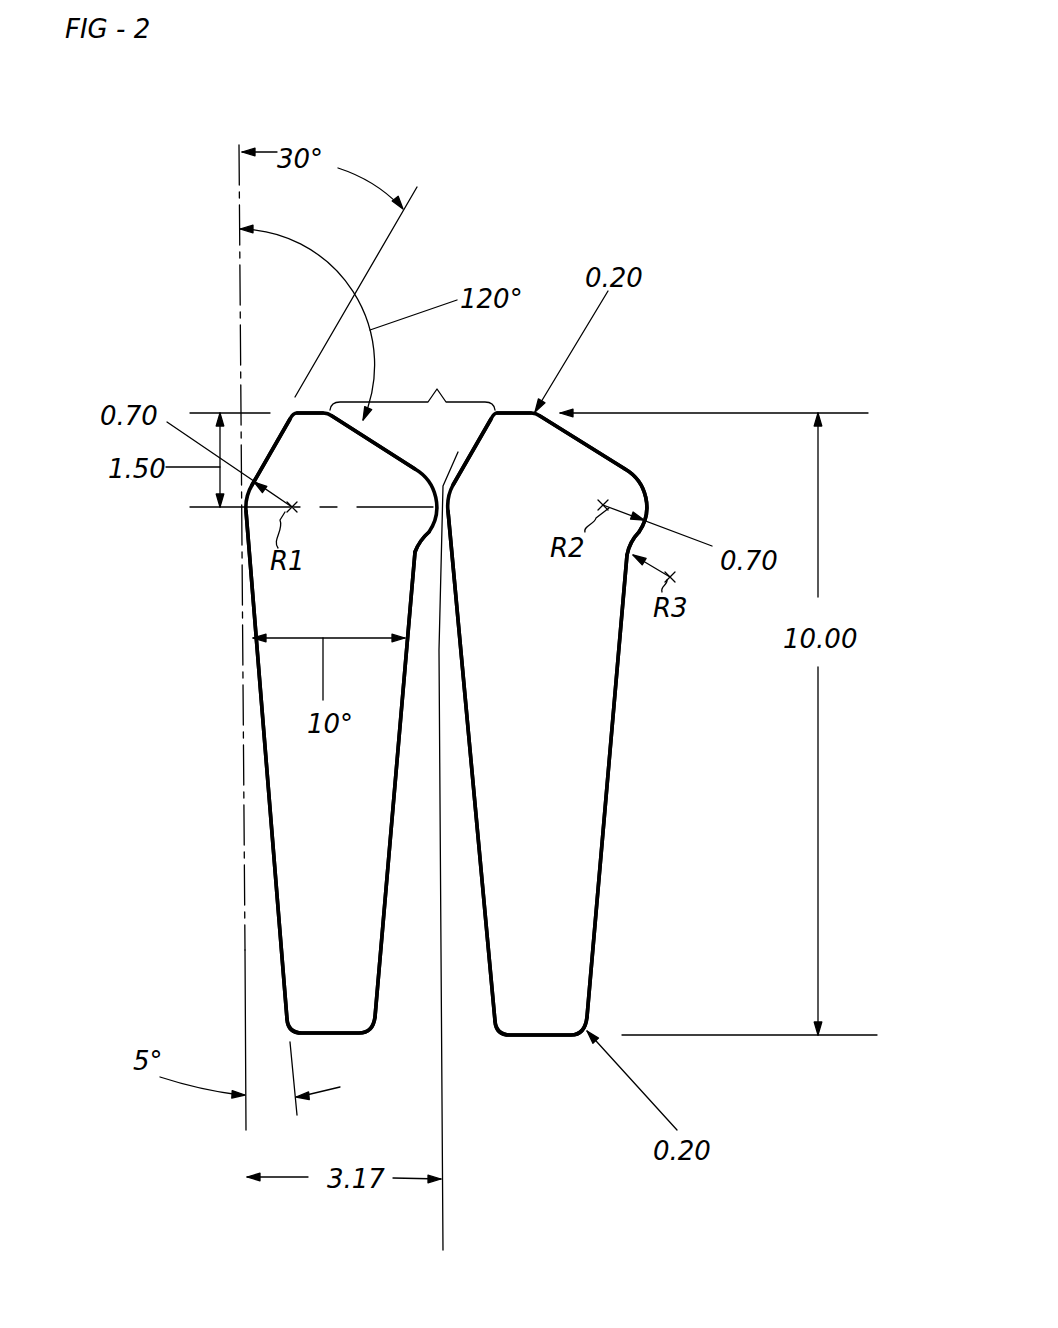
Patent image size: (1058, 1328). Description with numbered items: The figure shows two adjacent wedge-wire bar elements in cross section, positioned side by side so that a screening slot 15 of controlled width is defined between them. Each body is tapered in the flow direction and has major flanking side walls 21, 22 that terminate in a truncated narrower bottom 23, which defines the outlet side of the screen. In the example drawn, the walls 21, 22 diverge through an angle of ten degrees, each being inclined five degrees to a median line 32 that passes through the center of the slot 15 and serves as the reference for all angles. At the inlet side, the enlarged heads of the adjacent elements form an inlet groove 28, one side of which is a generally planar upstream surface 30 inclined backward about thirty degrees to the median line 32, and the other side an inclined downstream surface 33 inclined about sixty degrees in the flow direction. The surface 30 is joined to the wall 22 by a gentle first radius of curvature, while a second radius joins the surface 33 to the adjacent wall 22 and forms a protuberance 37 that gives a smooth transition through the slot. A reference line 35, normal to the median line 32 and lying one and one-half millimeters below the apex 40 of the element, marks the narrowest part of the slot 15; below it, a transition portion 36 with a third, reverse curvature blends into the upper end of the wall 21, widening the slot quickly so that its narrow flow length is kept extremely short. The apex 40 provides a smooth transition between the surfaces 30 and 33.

The screening slot 15 is at (472, 453).
The side wall 21 is at (389, 866).
The side wall 22 is at (262, 778).
The bottom 23 is at (347, 1036).
The inlet groove 28 is at (412, 384).
The upstream surface 30 is at (276, 445).
The median line 32 is at (442, 1135).
The downstream surface 33 is at (400, 445).
The reference line 35 is at (391, 509).
The transition portion 36 is at (422, 542).
The protuberance 37 is at (642, 487).
The apex 40 is at (312, 410).